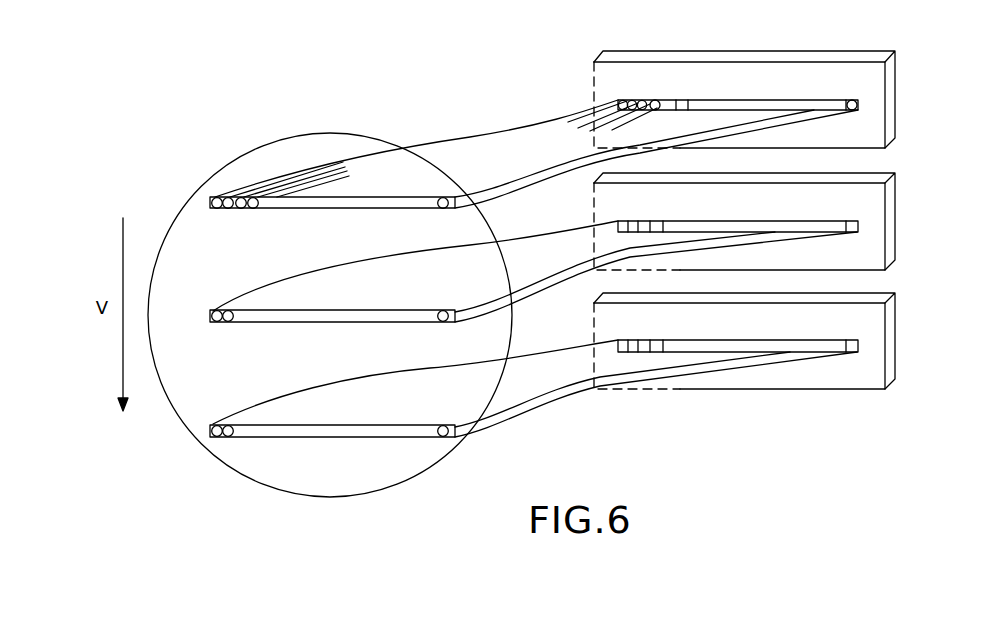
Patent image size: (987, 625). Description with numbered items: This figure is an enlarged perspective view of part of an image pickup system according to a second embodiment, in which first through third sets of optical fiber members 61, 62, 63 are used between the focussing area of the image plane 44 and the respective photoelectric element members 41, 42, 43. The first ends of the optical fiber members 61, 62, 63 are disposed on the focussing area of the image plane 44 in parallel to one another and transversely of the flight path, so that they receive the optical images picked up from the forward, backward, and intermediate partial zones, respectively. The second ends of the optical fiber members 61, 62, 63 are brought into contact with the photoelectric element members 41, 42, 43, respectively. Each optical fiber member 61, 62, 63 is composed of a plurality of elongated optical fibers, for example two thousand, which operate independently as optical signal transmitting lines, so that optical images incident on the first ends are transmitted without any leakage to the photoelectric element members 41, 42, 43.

The photoelectric element member 41 is at (895, 100).
The photoelectric element member 42 is at (895, 338).
The photoelectric element member 43 is at (895, 222).
The image plane 44 is at (231, 163).
The optical fiber member 61 is at (511, 127).
The optical fiber member 62 is at (556, 350).
The optical fiber member 63 is at (553, 232).